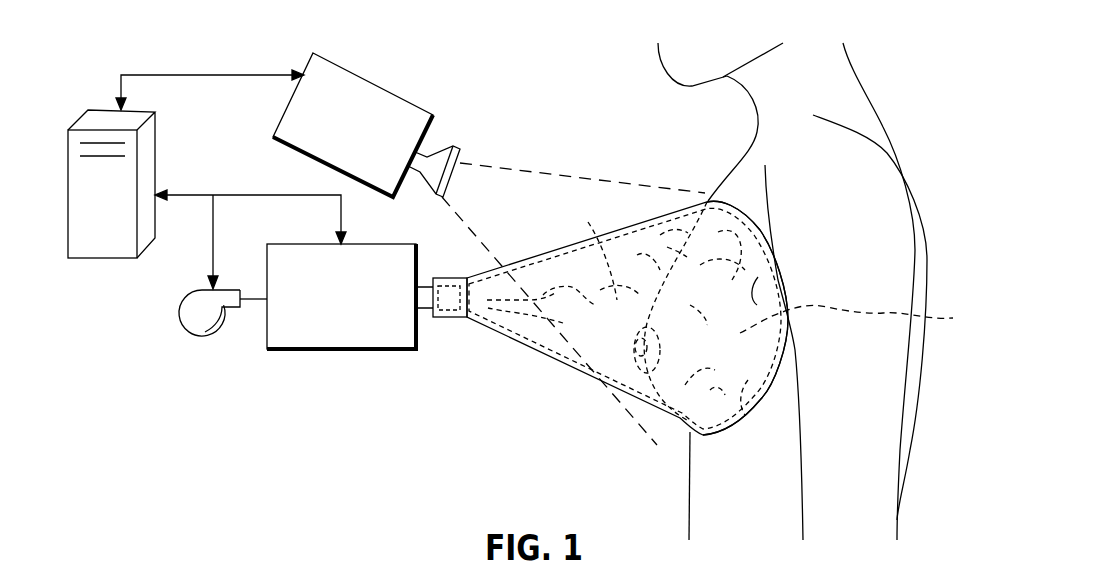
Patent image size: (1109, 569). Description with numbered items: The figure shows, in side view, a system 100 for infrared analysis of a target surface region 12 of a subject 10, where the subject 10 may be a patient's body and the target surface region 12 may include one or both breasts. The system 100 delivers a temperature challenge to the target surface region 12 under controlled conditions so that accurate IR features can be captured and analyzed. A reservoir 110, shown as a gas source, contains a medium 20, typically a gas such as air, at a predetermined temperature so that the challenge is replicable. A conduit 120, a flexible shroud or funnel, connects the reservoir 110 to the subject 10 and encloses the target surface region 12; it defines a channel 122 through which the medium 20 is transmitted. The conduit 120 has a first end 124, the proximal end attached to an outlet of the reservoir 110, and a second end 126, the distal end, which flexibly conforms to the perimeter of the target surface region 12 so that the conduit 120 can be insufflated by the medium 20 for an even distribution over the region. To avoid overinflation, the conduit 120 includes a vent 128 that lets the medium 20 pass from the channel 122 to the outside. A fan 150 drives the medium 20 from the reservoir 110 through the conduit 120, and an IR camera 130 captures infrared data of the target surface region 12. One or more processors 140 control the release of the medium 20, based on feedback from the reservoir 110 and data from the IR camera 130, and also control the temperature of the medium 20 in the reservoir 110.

The subject 10 is at (860, 145).
The target surface region 12 is at (864, 319).
The medium 20 is at (588, 250).
The system 100 is at (428, 261).
The reservoir 110 is at (315, 350).
The conduit 120 is at (626, 347).
The channel 122 is at (567, 363).
The first end 124 is at (437, 320).
The second end 126 is at (767, 410).
The vent 128 is at (657, 421).
The IR camera 130 is at (368, 77).
The processor 140 is at (100, 260).
The fan 150 is at (203, 338).